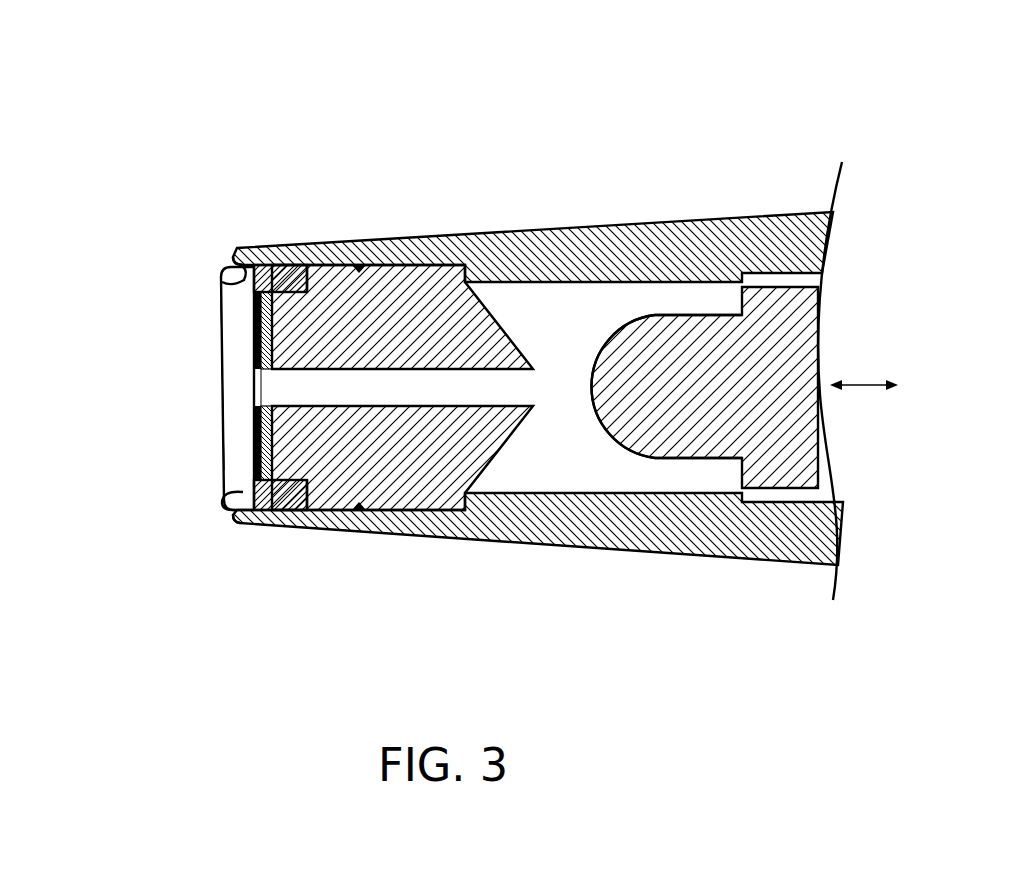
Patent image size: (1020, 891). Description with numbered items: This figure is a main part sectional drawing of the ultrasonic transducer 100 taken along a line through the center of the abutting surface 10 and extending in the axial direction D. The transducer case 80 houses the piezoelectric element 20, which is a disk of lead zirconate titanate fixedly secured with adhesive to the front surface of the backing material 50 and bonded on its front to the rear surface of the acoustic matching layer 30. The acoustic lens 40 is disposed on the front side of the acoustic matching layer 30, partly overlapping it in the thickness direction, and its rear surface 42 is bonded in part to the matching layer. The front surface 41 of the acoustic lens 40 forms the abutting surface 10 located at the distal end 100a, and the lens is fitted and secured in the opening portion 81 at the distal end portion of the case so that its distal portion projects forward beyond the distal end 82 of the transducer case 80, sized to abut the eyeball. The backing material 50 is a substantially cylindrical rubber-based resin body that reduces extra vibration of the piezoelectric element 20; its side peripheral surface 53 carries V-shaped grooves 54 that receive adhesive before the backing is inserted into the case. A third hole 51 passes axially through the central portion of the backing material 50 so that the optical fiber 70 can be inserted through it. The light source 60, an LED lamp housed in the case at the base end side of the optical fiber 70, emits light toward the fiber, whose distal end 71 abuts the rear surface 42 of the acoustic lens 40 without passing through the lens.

The ultrasonic transducer 100 is at (230, 53).
The distal end 100a is at (203, 387).
The abutting surface 10 is at (230, 352).
The front surface of the acoustic lens 41 is at (200, 355).
The piezoelectric element 20 is at (283, 266).
The acoustic matching layer 30 is at (252, 316).
The acoustic lens 40 is at (242, 440).
The rear surface of the acoustic lens 42 is at (307, 493).
The backing material 50 is at (418, 306).
The third hole 51 is at (597, 455).
The side peripheral surface 53 is at (410, 263).
The groove 54 is at (358, 262).
The light source 60 is at (777, 368).
The optical fiber 70 is at (334, 393).
The distal end of the optical fiber 71 is at (253, 397).
The transducer case 80 is at (572, 250).
The opening portion 81 is at (220, 268).
The distal end of the transducer case 82 is at (233, 262).
The axial direction D is at (860, 390).